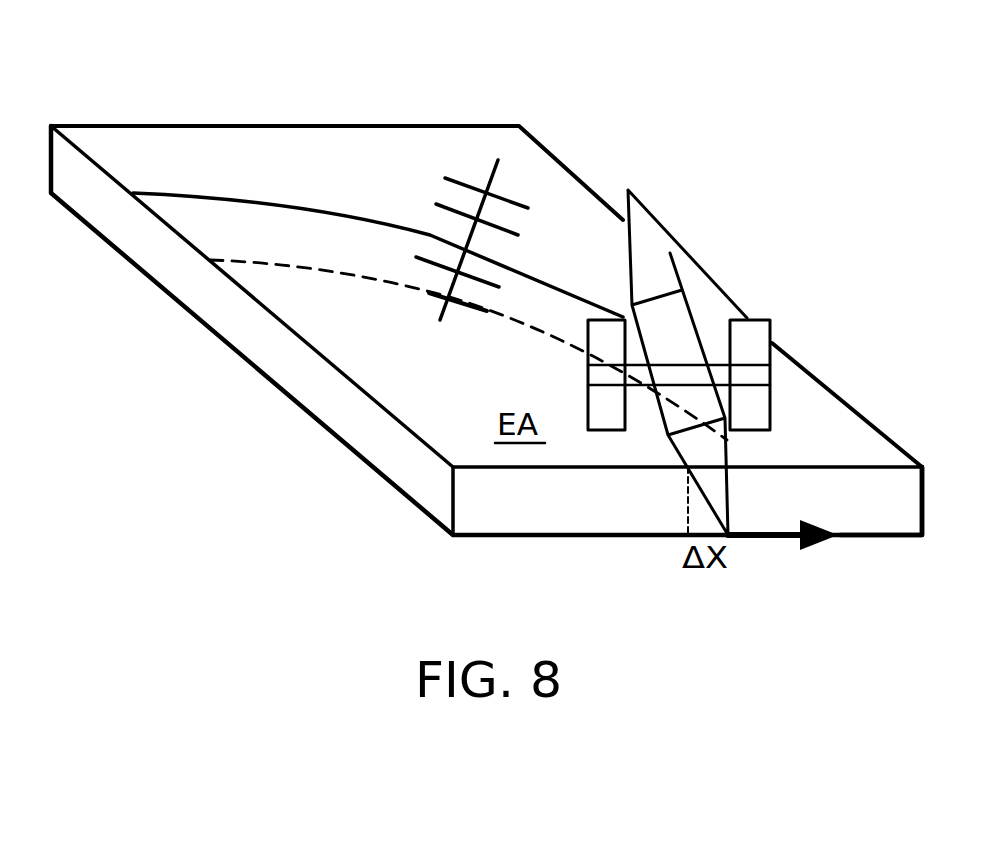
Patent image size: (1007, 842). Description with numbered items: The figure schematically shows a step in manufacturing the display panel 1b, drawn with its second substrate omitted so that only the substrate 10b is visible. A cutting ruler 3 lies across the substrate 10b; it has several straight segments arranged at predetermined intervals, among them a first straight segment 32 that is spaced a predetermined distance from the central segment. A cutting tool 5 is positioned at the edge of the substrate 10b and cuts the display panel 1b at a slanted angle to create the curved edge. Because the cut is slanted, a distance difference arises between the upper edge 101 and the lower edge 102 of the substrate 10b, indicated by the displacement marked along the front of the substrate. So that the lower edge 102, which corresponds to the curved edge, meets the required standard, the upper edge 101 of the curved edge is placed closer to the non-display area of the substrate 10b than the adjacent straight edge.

The display panel 1b is at (452, 106).
The substrate 10b is at (823, 410).
The upper edge 101 is at (257, 195).
The lower edge 102 is at (283, 270).
The cutting ruler 3 is at (498, 249).
The first straight segment 32 is at (467, 312).
The cutting tool 5 is at (655, 218).